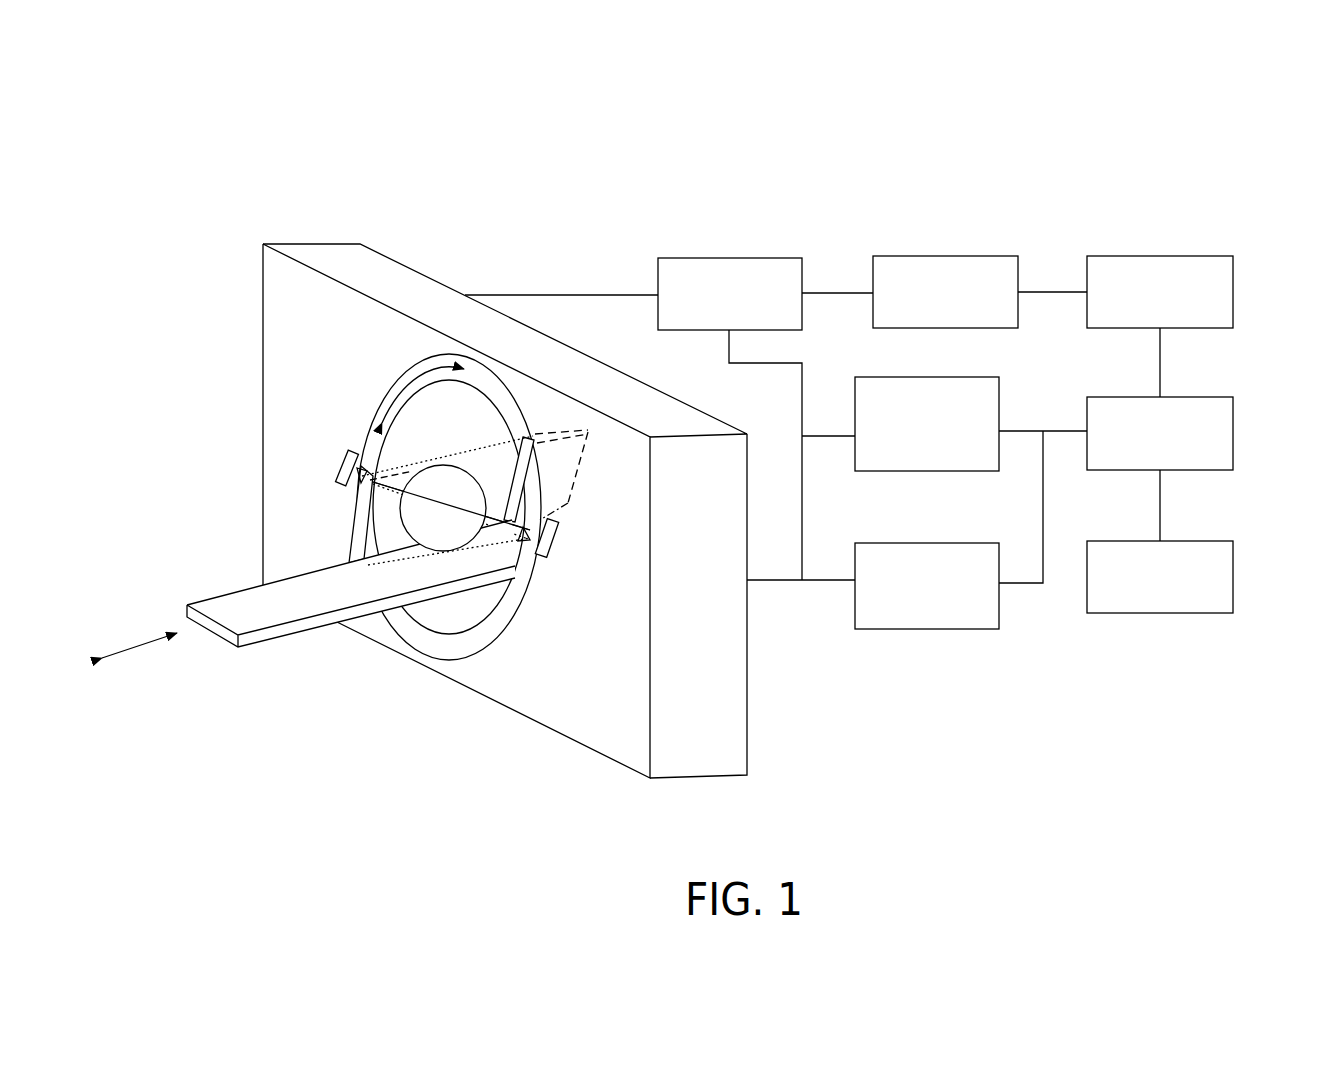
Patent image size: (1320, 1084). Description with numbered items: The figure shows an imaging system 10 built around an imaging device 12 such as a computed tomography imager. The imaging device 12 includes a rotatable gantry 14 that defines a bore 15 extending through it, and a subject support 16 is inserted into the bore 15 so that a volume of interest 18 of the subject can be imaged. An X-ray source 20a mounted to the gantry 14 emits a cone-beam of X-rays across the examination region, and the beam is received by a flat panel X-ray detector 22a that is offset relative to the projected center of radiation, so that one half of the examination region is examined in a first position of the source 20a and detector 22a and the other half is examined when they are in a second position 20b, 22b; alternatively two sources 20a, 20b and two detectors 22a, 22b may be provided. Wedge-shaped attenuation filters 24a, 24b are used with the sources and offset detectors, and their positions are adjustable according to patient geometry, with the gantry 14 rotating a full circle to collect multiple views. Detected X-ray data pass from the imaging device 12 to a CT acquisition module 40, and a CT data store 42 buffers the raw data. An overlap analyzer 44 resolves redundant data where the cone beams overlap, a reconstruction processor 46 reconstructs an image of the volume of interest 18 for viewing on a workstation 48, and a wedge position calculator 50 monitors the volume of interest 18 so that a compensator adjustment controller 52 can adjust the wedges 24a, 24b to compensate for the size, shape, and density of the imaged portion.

The imaging system 10 is at (697, 440).
The imaging device 12 is at (318, 243).
The rotatable gantry 14 is at (391, 382).
The bore 15 is at (456, 439).
The subject support 16 is at (208, 528).
The volume of interest 18 is at (456, 519).
The X-ray source 20a is at (339, 462).
The X-ray source 20b is at (543, 562).
The X-ray detector 22a is at (535, 434).
The X-ray detector 22b is at (348, 550).
The attenuation filter 24a is at (362, 440).
The attenuation filter 24b is at (565, 506).
The CT acquisition module 40 is at (720, 258).
The CT data store 42 is at (945, 256).
The overlap analyzer 44 is at (1160, 256).
The reconstruction processor 46 is at (1233, 430).
The workstation 48 is at (1233, 575).
The wedge position calculator 50 is at (928, 471).
The compensator adjustment controller 52 is at (930, 629).